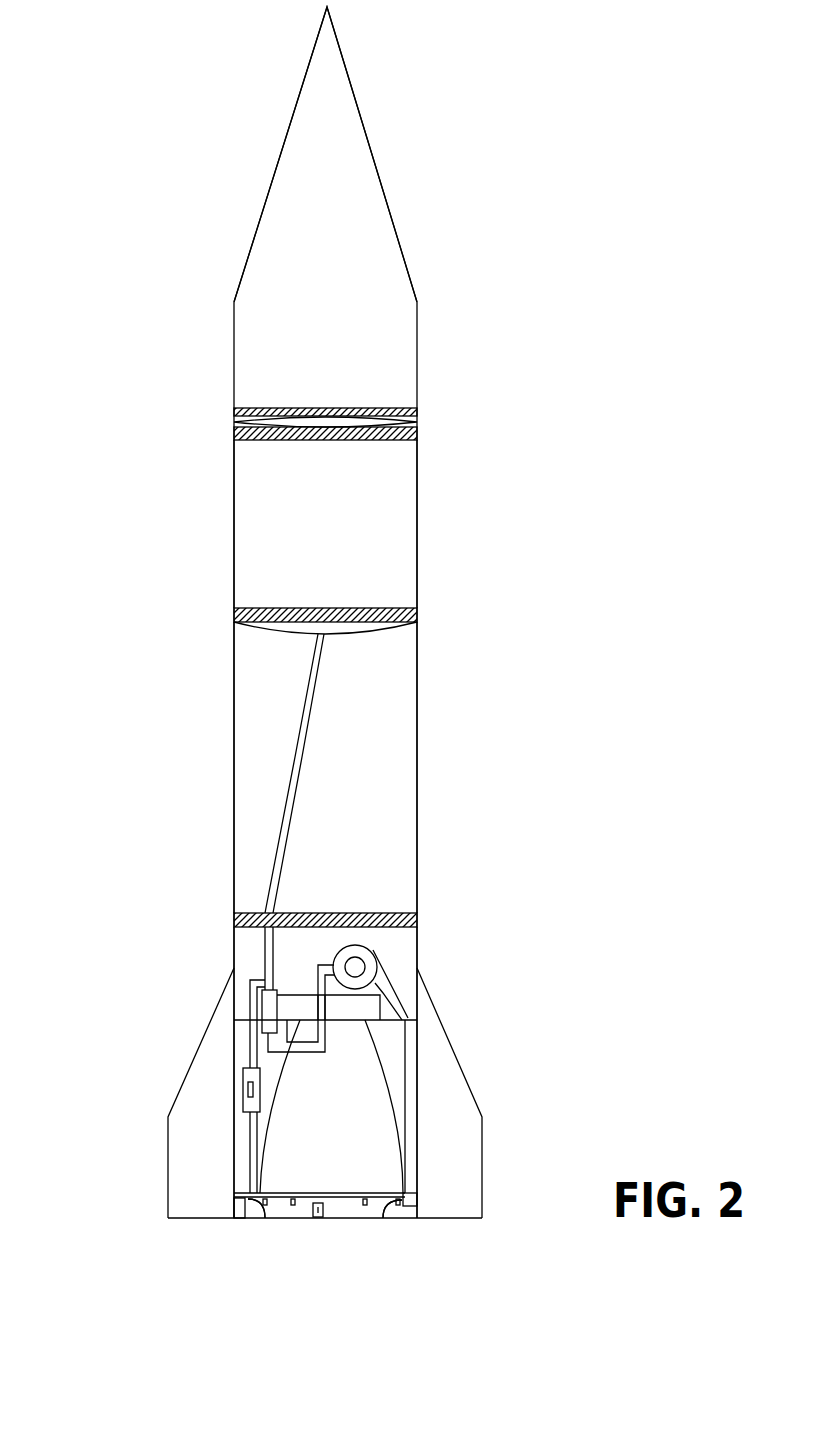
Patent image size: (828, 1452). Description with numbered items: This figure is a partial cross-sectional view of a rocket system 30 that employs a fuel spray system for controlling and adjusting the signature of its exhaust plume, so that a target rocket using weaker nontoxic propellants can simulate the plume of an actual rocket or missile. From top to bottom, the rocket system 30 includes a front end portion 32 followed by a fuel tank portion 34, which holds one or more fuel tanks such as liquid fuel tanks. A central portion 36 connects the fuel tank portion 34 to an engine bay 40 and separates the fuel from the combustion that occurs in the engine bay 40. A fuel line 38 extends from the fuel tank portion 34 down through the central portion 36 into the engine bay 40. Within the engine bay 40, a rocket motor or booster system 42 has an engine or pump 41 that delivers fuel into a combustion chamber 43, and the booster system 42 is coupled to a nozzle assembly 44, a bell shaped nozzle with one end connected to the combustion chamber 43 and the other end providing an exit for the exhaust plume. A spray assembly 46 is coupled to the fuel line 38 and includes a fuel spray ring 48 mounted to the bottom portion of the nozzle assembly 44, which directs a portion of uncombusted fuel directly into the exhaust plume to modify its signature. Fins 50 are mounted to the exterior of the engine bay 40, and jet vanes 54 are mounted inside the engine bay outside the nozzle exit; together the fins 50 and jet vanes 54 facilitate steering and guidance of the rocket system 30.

The rocket system 30 is at (138, 122).
The front end portion 32 is at (412, 162).
The fuel tank portion 34 is at (437, 508).
The central portion 36 is at (445, 752).
The fuel line 38 is at (318, 782).
The engine bay 40 is at (468, 958).
The engine or pump 41 is at (383, 955).
The rocket motor or booster system 42 is at (218, 948).
The combustion chamber 43 is at (362, 1018).
The nozzle assembly 44 is at (336, 1108).
The spray assembly 46 is at (240, 1046).
The fuel spray ring 48 is at (350, 1203).
The fins 50 is at (212, 1146).
The jet vanes 54 is at (248, 1222).